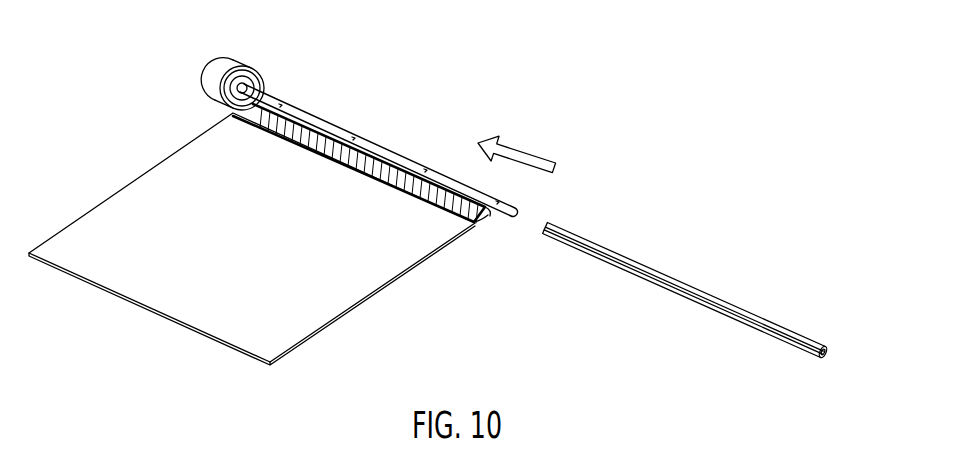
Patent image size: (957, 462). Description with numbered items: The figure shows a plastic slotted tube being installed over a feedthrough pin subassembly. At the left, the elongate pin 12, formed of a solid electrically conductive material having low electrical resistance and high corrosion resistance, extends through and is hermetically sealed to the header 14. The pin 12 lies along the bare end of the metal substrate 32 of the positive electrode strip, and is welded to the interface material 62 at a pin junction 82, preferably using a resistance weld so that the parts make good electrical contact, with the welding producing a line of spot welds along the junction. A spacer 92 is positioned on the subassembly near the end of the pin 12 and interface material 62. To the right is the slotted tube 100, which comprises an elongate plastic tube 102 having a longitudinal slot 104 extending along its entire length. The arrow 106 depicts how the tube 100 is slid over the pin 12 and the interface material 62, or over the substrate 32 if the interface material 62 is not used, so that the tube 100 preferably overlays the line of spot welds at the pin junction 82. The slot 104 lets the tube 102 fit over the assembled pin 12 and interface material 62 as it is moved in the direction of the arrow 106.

The header 14 is at (192, 73).
The pin 12 is at (265, 100).
The pin junction 82 is at (357, 138).
The interface material 62 is at (492, 210).
The spacer 92 is at (488, 215).
The metal substrate 32 is at (482, 223).
The arrow 106 is at (513, 147).
The slotted tube 100 is at (700, 213).
The longitudinal slot 104 is at (655, 268).
The elongate plastic tube 102 is at (815, 357).